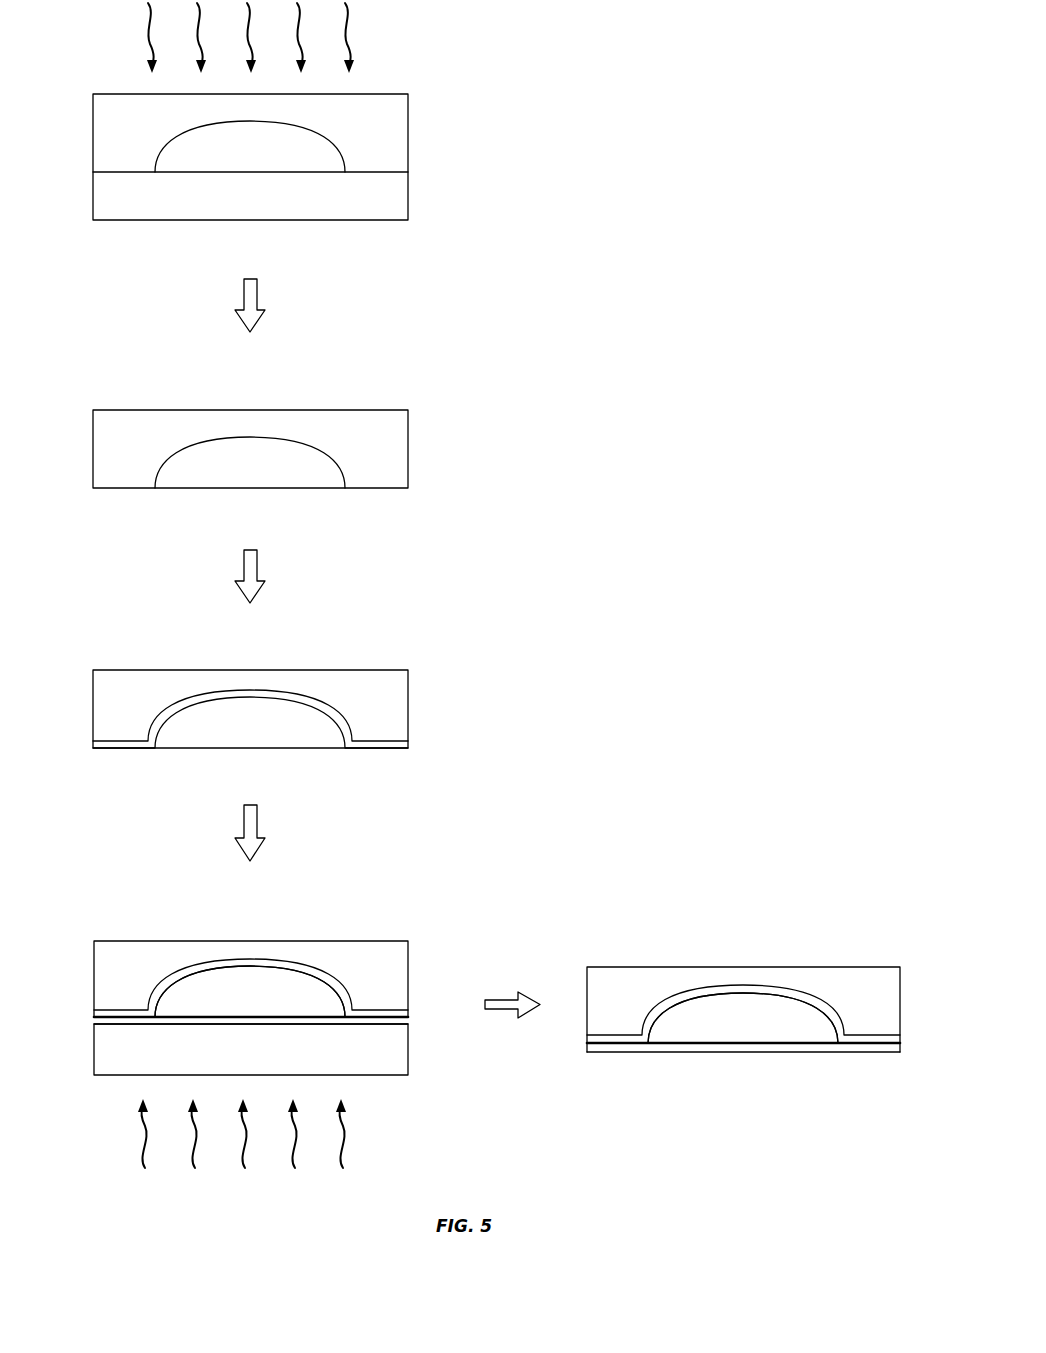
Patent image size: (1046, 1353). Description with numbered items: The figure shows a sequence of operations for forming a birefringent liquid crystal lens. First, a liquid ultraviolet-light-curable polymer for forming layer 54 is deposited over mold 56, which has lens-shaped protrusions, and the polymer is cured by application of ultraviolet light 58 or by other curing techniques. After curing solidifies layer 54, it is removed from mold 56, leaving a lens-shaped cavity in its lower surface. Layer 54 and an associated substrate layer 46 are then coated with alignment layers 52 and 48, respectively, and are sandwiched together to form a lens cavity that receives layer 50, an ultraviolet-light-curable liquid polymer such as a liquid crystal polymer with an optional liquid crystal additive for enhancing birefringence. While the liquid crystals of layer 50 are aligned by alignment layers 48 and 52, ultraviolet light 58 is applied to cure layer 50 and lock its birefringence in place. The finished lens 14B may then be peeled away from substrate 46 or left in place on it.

The ultraviolet light 58 is at (339, 31).
The layer 54 is at (398, 130).
The mold 56 is at (398, 193).
The alignment layer 52 is at (397, 745).
The layer 50 is at (249, 986).
The alignment layer 48 is at (183, 1022).
The substrate layer 46 is at (104, 1047).
The lens 14B is at (619, 927).